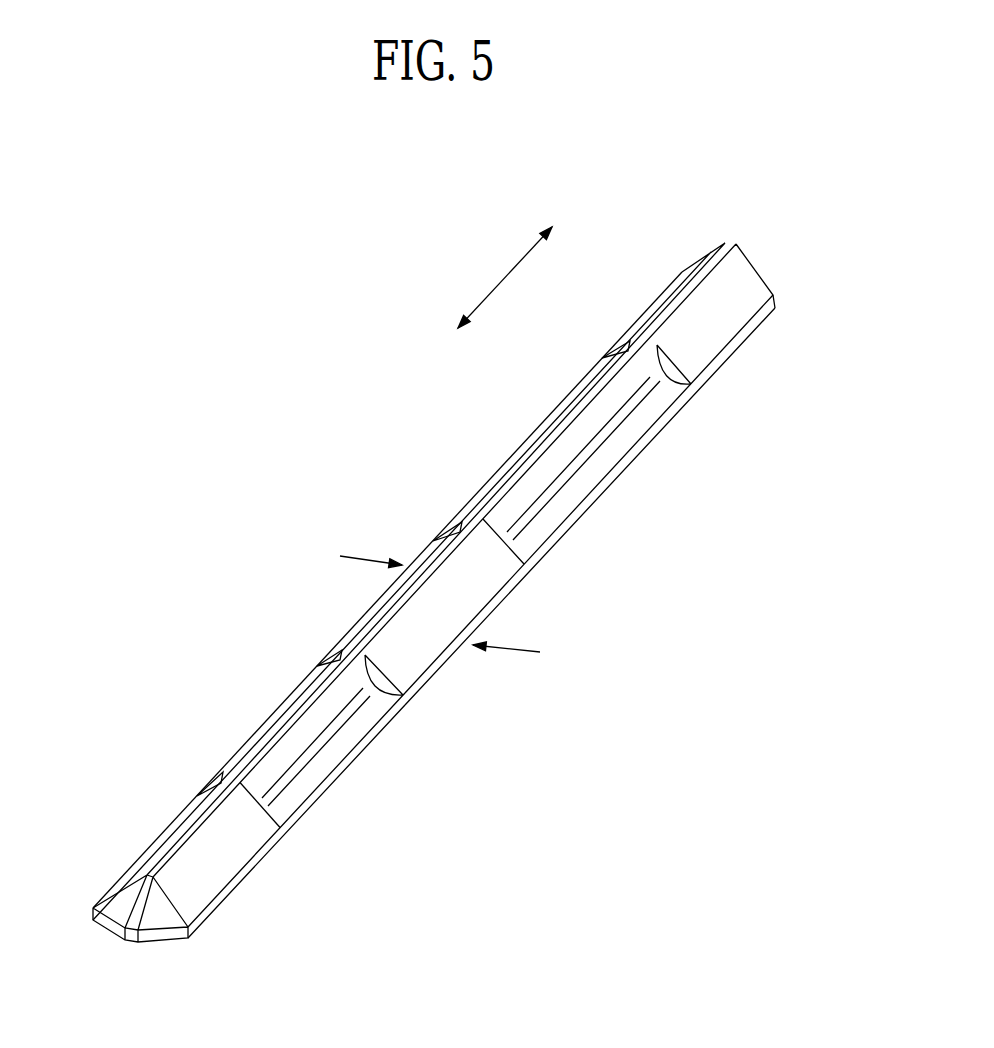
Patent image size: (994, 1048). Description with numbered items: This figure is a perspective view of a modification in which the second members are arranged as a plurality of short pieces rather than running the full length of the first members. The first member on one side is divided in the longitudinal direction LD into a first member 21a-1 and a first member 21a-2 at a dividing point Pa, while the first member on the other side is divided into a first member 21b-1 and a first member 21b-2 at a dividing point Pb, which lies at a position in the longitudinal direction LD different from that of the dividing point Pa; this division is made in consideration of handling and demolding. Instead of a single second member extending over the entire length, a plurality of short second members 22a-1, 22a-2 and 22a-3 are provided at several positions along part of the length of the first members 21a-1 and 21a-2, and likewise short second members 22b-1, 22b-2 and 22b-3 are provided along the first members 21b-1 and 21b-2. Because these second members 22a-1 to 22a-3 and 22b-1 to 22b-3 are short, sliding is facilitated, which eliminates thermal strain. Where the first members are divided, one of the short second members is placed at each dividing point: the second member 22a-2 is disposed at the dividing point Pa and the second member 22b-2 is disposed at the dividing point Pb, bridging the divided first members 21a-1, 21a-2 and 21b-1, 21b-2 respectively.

The first member 21a-1 is at (256, 734).
The first member 21a-2 is at (513, 455).
The first member 21b-1 is at (353, 761).
The first member 21b-2 is at (615, 478).
The second member 22a-1 is at (152, 845).
The second member 22a-2 is at (360, 620).
The second member 22a-3 is at (643, 315).
The second member 22b-1 is at (220, 870).
The second member 22b-2 is at (400, 648).
The second member 22b-3 is at (703, 337).
The longitudinal direction LD is at (502, 280).
The dividing point Pa is at (353, 551).
The dividing point Pb is at (524, 650).